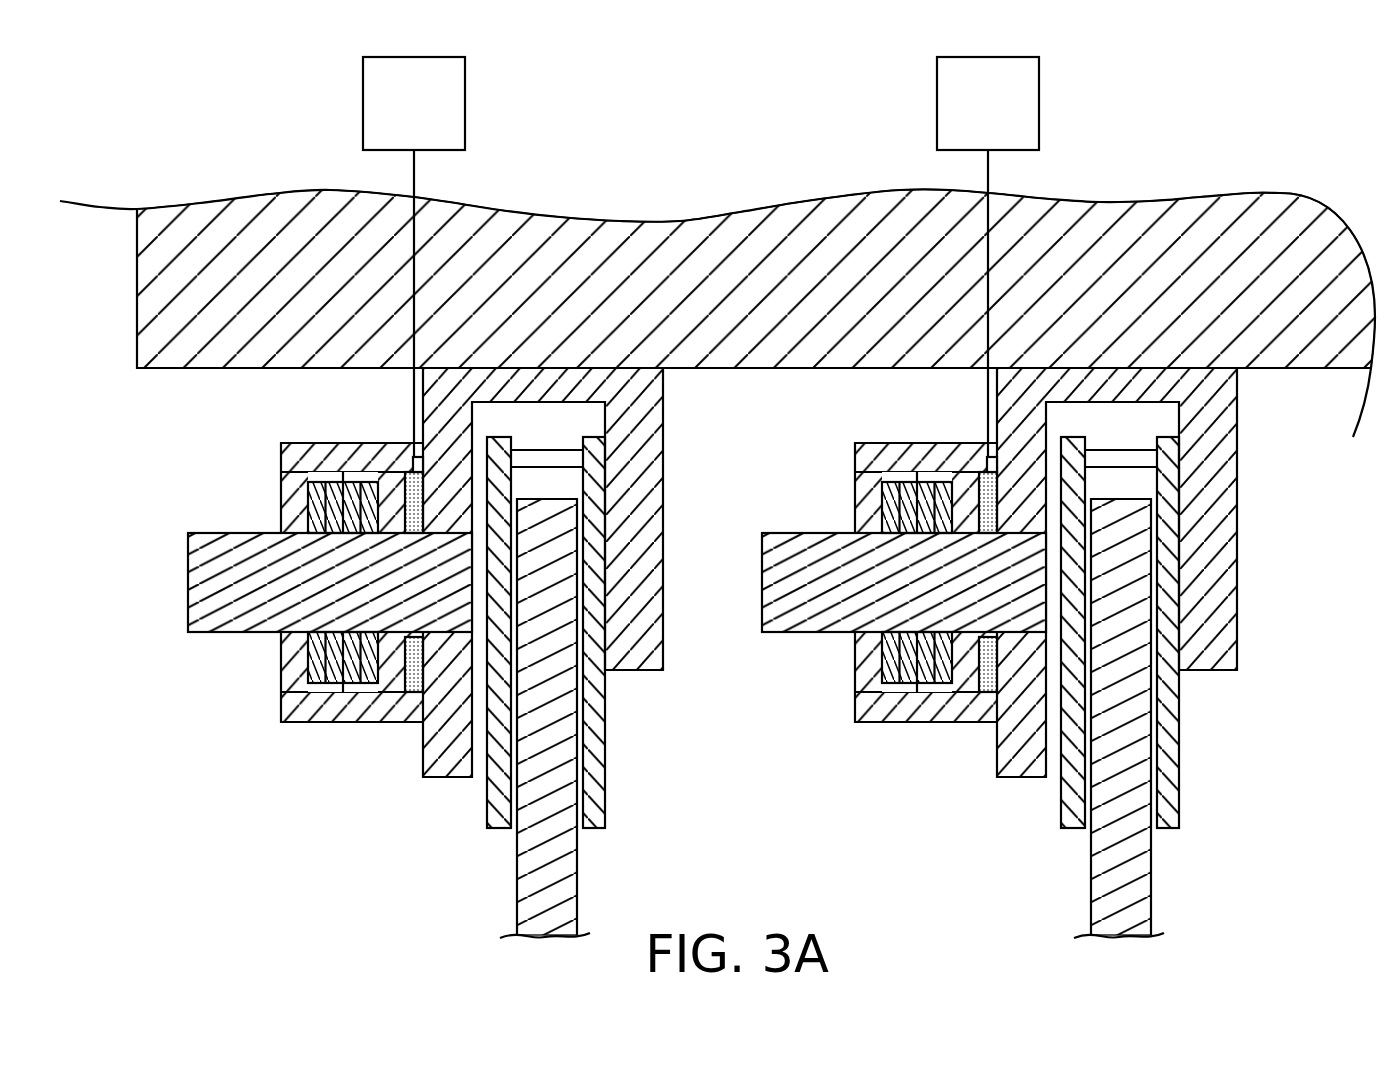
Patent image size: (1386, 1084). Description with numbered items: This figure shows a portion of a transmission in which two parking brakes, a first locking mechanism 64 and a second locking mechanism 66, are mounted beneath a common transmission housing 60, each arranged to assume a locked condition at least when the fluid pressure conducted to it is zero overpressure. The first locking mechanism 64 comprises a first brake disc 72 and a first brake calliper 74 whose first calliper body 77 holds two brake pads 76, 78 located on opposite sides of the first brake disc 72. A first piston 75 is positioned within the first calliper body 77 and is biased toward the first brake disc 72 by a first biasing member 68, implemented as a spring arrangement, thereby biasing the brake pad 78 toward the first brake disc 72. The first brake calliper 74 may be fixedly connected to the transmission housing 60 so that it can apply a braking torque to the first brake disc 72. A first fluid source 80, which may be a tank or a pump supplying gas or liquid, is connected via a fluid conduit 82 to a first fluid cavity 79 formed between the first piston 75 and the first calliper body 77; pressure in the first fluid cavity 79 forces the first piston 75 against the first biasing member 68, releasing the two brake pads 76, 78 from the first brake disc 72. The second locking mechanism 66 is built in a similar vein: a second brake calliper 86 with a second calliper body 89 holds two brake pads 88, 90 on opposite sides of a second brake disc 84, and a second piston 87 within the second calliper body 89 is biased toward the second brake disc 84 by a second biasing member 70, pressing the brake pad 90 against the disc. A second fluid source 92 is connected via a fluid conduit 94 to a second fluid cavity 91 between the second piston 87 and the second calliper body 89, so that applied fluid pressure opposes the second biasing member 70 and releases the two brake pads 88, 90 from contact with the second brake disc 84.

The transmission housing 60 is at (648, 270).
The first locking mechanism 64 is at (1051, 497).
The second locking mechanism 66 is at (477, 497).
The first biasing member 68 is at (864, 592).
The second biasing member 70 is at (307, 657).
The first brake disc 72 is at (1080, 718).
The first brake calliper 74 is at (869, 553).
The first piston 75 is at (902, 556).
The brake pad 76 is at (1178, 632).
The first calliper body 77 is at (1153, 572).
The brake pad 78 is at (1024, 636).
The first fluid cavity 79 is at (1144, 581).
The first fluid source 80 is at (1028, 103).
The fluid conduit 82 is at (1053, 303).
The second brake disc 84 is at (518, 888).
The second brake calliper 86 is at (258, 428).
The second piston 87 is at (255, 588).
The brake pad 88 is at (612, 757).
The second calliper body 89 is at (437, 422).
The brake pad 90 is at (487, 797).
The second fluid cavity 91 is at (407, 498).
The second fluid source 92 is at (465, 100).
The fluid conduit 94 is at (414, 177).